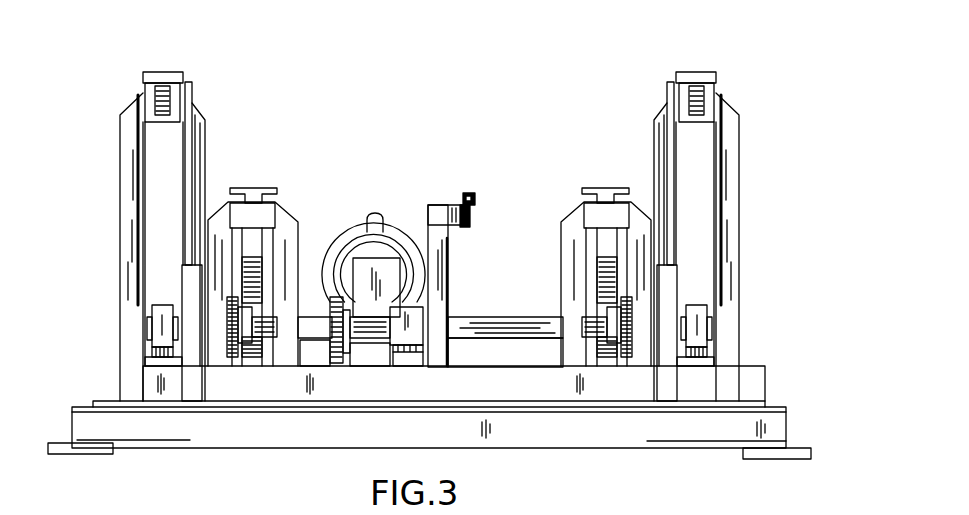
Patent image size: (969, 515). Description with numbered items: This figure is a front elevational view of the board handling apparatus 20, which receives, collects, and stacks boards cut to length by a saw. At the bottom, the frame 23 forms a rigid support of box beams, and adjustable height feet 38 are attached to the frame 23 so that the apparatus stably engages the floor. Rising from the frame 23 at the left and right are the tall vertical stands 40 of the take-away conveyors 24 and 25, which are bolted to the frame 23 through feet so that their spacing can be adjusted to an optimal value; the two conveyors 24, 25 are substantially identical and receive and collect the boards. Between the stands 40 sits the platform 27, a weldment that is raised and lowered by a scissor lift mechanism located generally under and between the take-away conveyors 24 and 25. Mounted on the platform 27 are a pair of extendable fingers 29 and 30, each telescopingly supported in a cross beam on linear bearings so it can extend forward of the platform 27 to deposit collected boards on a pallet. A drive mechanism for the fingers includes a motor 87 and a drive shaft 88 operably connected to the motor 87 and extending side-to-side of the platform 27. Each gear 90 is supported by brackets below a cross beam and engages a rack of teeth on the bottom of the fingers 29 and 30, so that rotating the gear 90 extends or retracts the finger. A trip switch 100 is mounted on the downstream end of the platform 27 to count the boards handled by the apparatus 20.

The board handling apparatus 20 is at (748, 52).
The frame 23 is at (667, 451).
The take-away conveyor 24 is at (175, 65).
The take-away conveyor 25 is at (684, 68).
The platform 27 is at (513, 388).
The finger 29 is at (250, 189).
The finger 30 is at (608, 192).
The feet 38 is at (50, 455).
The stand 40 is at (128, 191).
The motor 87 is at (340, 236).
The drive shaft 88 is at (493, 316).
The gear 90 is at (257, 275).
The trip switch 100 is at (464, 197).